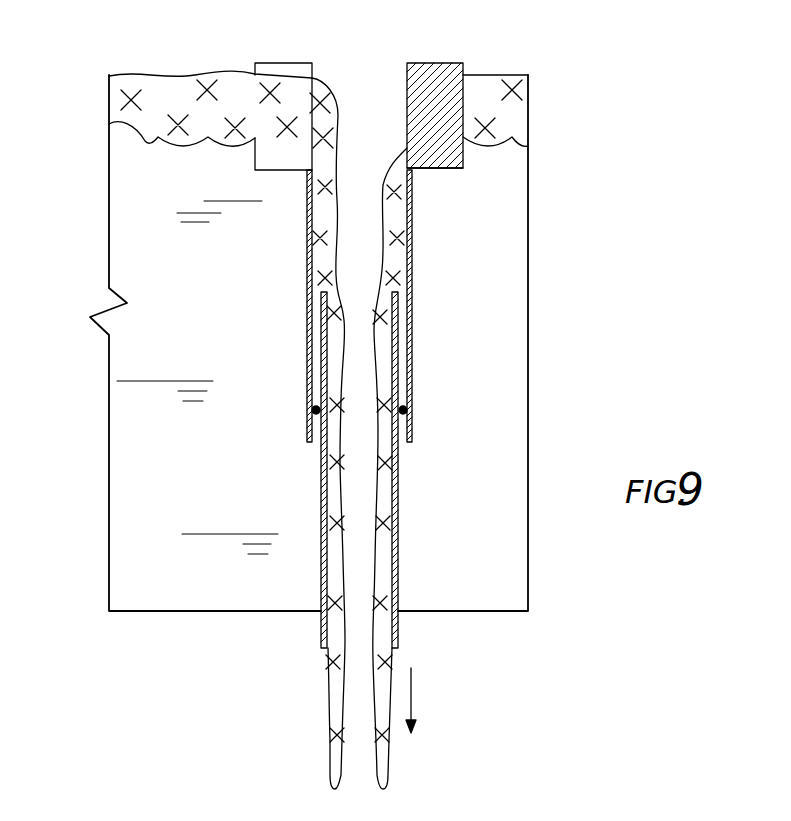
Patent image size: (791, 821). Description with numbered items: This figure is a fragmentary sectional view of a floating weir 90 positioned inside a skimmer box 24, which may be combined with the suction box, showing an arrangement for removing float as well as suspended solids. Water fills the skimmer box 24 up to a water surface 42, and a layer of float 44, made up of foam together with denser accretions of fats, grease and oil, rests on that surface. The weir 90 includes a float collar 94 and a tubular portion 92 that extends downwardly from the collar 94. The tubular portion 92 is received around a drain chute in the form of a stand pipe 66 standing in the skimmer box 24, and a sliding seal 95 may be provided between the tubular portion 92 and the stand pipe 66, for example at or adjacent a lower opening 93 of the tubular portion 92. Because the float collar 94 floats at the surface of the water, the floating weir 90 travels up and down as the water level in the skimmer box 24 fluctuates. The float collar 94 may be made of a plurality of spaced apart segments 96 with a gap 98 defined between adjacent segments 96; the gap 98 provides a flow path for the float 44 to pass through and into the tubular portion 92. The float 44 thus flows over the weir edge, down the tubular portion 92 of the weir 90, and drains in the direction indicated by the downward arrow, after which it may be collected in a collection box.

The skimmer box 24 is at (530, 490).
The water surface 42 is at (105, 125).
The float 44 is at (498, 110).
The stand pipe 66 is at (400, 525).
The floating weir 90 is at (456, 222).
The tubular portion 92 is at (413, 328).
The lower opening 93 is at (406, 456).
The float collar 94 is at (455, 160).
The sliding seal 95 is at (316, 410).
The segments 96 is at (436, 58).
The gap 98 is at (235, 54).